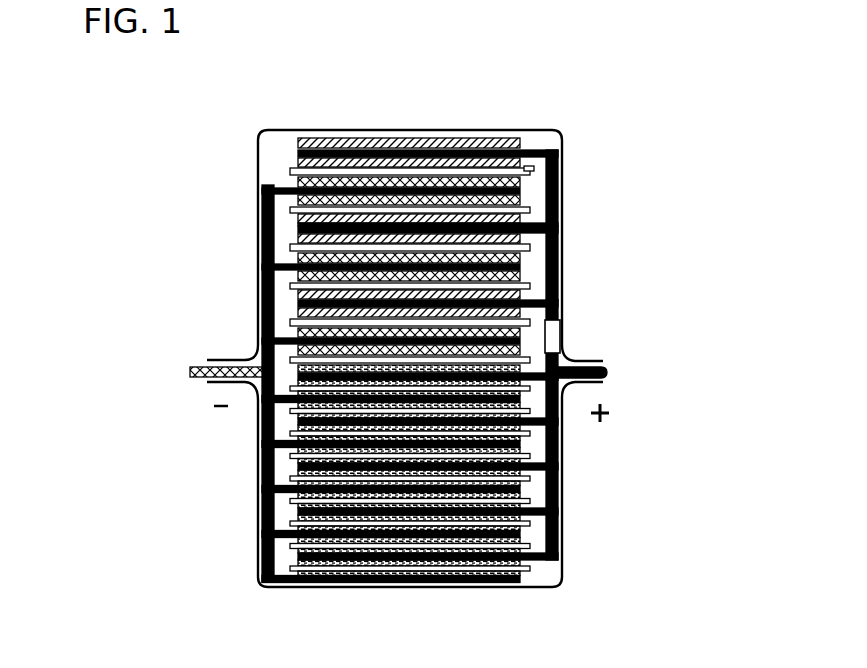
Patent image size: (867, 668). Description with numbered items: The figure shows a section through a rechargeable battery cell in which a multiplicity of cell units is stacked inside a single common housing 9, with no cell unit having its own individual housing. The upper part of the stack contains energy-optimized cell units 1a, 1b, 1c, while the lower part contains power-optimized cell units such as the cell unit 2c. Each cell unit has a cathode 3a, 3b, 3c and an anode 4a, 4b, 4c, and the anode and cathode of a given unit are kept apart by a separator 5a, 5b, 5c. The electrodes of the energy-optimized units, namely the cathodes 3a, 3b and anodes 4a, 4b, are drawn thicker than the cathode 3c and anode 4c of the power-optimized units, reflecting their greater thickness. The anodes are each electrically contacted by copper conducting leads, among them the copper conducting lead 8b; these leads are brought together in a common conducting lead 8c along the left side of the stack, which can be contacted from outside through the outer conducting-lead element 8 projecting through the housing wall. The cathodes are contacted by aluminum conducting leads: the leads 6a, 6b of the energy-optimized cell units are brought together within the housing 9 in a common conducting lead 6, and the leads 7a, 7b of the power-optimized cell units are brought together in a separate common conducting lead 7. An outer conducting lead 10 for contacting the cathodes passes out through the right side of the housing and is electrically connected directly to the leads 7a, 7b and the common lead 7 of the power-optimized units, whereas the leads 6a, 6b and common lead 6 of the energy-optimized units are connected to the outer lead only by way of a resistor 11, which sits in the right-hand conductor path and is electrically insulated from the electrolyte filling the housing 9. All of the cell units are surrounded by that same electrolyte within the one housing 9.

The energy-optimized cell unit 1a is at (290, 170).
The energy-optimized cell unit 1b is at (290, 210).
The energy-optimized cell unit 1c is at (295, 270).
The power-optimized cell unit 2c is at (548, 478).
The cathode 3a is at (388, 146).
The cathode 3b is at (320, 220).
The cathode 3c is at (290, 486).
The anode 4a is at (548, 186).
The anode 4b is at (546, 275).
The anode 4c is at (560, 406).
The separator 5a is at (532, 170).
The separator 5b is at (295, 247).
The separator 5c is at (293, 475).
The common conducting lead 6 is at (546, 212).
The aluminum conducting lead 6a is at (300, 233).
The aluminum conducting lead 6b is at (473, 147).
The common conducting lead 7 is at (546, 540).
The aluminum conducting lead 7a is at (548, 505).
The aluminum conducting lead 7b is at (283, 507).
The outer conducting-lead element 8 is at (190, 376).
The copper conducting lead 8b is at (268, 575).
The common conducting lead 8c is at (295, 292).
The housing 9 is at (478, 588).
The outer conducting lead 10 is at (600, 379).
The resistor 11 is at (565, 331).